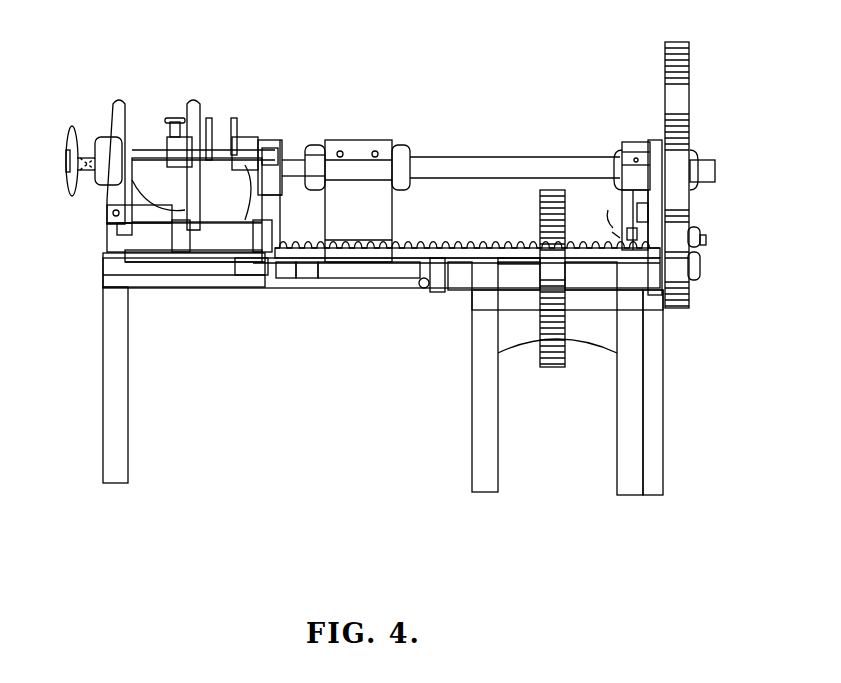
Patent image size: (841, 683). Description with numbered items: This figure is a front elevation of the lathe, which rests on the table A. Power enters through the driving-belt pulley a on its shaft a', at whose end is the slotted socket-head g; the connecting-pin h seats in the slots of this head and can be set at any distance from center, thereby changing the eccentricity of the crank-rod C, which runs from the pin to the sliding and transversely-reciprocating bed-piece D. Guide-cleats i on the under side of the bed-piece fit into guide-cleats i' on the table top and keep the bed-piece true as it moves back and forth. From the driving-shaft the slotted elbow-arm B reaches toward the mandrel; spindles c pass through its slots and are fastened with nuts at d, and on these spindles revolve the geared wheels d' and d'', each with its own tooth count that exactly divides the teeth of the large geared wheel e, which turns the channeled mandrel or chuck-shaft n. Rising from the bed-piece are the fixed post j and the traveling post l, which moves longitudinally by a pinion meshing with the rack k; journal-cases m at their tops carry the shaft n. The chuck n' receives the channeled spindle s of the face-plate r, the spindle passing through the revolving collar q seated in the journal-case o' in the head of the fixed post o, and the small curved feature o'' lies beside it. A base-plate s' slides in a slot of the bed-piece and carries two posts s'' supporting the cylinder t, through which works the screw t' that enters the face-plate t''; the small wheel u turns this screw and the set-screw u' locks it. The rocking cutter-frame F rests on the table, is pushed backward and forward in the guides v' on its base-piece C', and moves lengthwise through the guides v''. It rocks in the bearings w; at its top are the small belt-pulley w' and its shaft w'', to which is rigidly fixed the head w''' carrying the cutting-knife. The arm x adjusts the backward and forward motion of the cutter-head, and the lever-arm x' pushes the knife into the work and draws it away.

The table A is at (383, 376).
The rack k is at (478, 250).
The guides v'' is at (184, 270).
The base-piece C' is at (193, 262).
The guides v' is at (251, 268).
The guide-cleats i' is at (286, 271).
The guide-cleats i is at (358, 271).
The connecting-pin h is at (427, 292).
The slotted socket-head g is at (460, 276).
The shaft a' is at (557, 276).
The sliding and transversely-reciprocating bed-piece D is at (519, 257).
The driving-belt pulley a is at (552, 278).
The large geared wheel e is at (677, 175).
The mandrel or chuck-shaft n is at (562, 169).
The journal-cases m is at (511, 164).
The elbow-arm B is at (642, 217).
The nuts d is at (611, 224).
The geared wheel d'' is at (687, 215).
The geared wheel d' is at (684, 266).
The spindles c is at (706, 237).
The fixed post j is at (637, 195).
The traveling post l is at (357, 201).
The chuck n' is at (316, 165).
The spindle s is at (293, 167).
The revolving collar q is at (277, 194).
The head w''' is at (270, 167).
The journal-case o' is at (274, 115).
The fixed post o is at (267, 205).
The cam surface o'' is at (245, 192).
The rocking cutter-frame F is at (197, 190).
The small belt-pulley w' is at (203, 152).
The shaft w'' is at (231, 153).
The set-screw u' is at (175, 115).
The face-plate t'' is at (212, 123).
The face-plate r is at (234, 118).
The lever-arm x' is at (116, 162).
The arm x is at (195, 165).
The cylinder t is at (108, 161).
The screw t' is at (87, 135).
The small wheel u is at (72, 161).
The posts s'' is at (139, 209).
The base-plate s' is at (184, 237).
The bearings w is at (222, 236).
The crank-rod C is at (437, 223).